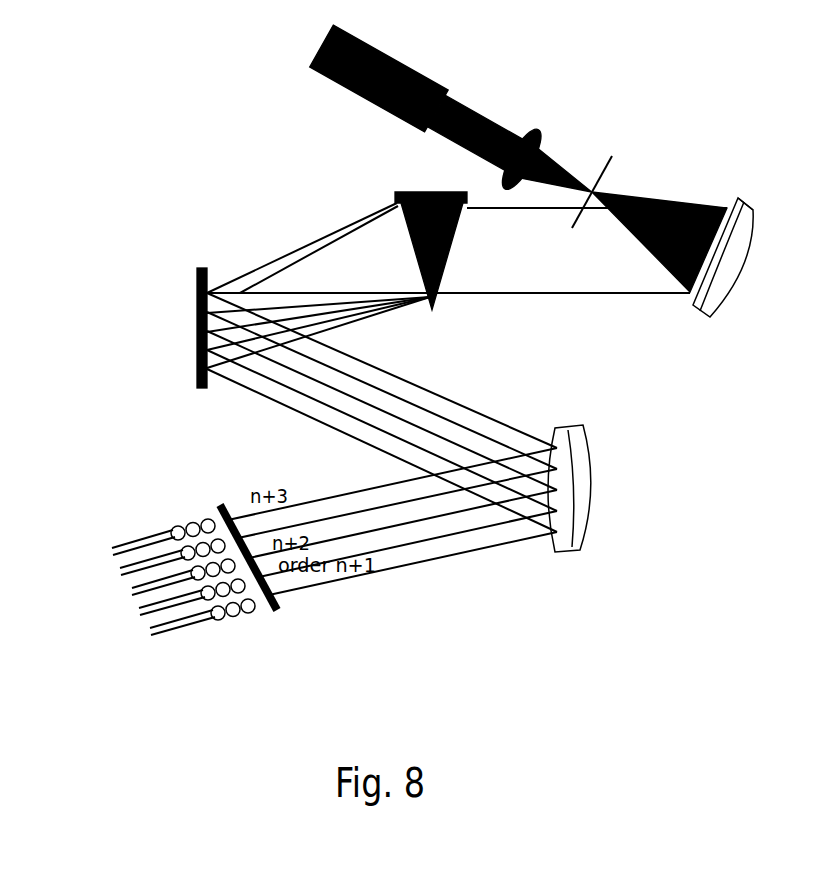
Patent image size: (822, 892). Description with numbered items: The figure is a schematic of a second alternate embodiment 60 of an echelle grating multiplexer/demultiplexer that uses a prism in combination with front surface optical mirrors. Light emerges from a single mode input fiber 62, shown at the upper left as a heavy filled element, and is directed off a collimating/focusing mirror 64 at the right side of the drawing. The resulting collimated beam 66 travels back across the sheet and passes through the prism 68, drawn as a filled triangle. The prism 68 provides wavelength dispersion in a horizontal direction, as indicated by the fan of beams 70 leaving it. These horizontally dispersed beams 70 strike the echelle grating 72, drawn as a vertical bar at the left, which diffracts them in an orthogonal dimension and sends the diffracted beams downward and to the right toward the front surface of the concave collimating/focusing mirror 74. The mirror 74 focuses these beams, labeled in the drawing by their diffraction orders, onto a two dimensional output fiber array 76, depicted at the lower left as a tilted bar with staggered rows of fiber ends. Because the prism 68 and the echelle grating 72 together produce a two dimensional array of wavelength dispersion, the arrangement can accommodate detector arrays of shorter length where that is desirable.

The second alternate embodiment 60 is at (616, 74).
The single mode input fiber 62 is at (492, 123).
The collimating/focusing mirror 64 is at (747, 200).
The collimated beam 66 is at (528, 293).
The prism 68 is at (428, 190).
The beams 70 is at (298, 247).
The echelle grating 72 is at (198, 303).
The concave collimating/focusing mirror 74 is at (583, 466).
The two dimensional output fiber array 76 is at (213, 652).